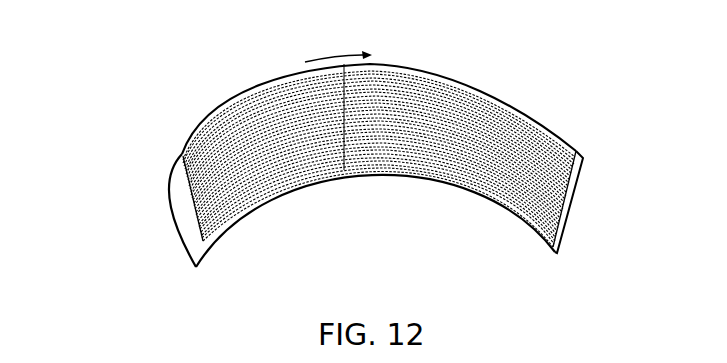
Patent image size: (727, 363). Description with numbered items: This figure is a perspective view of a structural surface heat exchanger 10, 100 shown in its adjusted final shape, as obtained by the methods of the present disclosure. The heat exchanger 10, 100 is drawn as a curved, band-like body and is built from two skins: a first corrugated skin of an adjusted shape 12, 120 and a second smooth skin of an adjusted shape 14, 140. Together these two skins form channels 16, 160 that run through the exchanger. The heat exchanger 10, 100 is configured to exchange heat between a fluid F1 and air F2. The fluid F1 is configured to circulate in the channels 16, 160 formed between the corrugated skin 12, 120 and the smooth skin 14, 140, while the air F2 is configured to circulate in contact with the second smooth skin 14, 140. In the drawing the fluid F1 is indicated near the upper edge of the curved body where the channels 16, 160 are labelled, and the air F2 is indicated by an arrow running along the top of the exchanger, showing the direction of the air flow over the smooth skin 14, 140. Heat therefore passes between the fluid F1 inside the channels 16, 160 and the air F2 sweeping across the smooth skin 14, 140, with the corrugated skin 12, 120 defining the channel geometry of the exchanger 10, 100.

The heat exchanger 10 is at (320, 147).
The heat exchanger of an adjusted final shape 100 is at (320, 147).
The first corrugated skin 12 is at (375, 221).
The first corrugated skin of an adjusted shape 120 is at (512, 215).
The second smooth skin 14 is at (130, 207).
The second smooth skin of an adjusted shape 140 is at (178, 175).
The channels 16 is at (379, 93).
The channels 160 is at (493, 88).
The fluid F1 is at (548, 116).
The air F2 is at (333, 30).